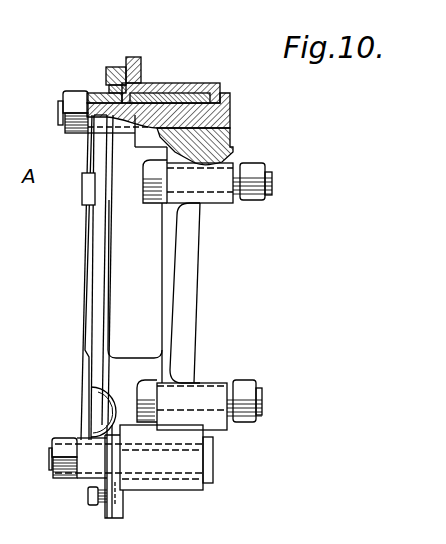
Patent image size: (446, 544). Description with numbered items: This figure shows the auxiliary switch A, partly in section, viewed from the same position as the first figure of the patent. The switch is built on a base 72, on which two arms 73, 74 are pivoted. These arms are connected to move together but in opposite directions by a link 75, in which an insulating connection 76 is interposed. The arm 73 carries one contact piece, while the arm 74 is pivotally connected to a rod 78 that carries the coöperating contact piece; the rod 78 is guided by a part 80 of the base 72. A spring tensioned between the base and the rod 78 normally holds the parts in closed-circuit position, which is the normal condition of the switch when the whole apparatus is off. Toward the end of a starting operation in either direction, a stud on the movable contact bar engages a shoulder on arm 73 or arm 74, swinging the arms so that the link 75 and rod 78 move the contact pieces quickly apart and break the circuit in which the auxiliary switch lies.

The base 72 is at (168, 297).
The arm 73 is at (91, 126).
The arm 74 is at (93, 465).
The link 75 is at (95, 276).
The insulating connection 76 is at (92, 403).
The rod 78 is at (85, 240).
The part of the base 80 is at (82, 187).